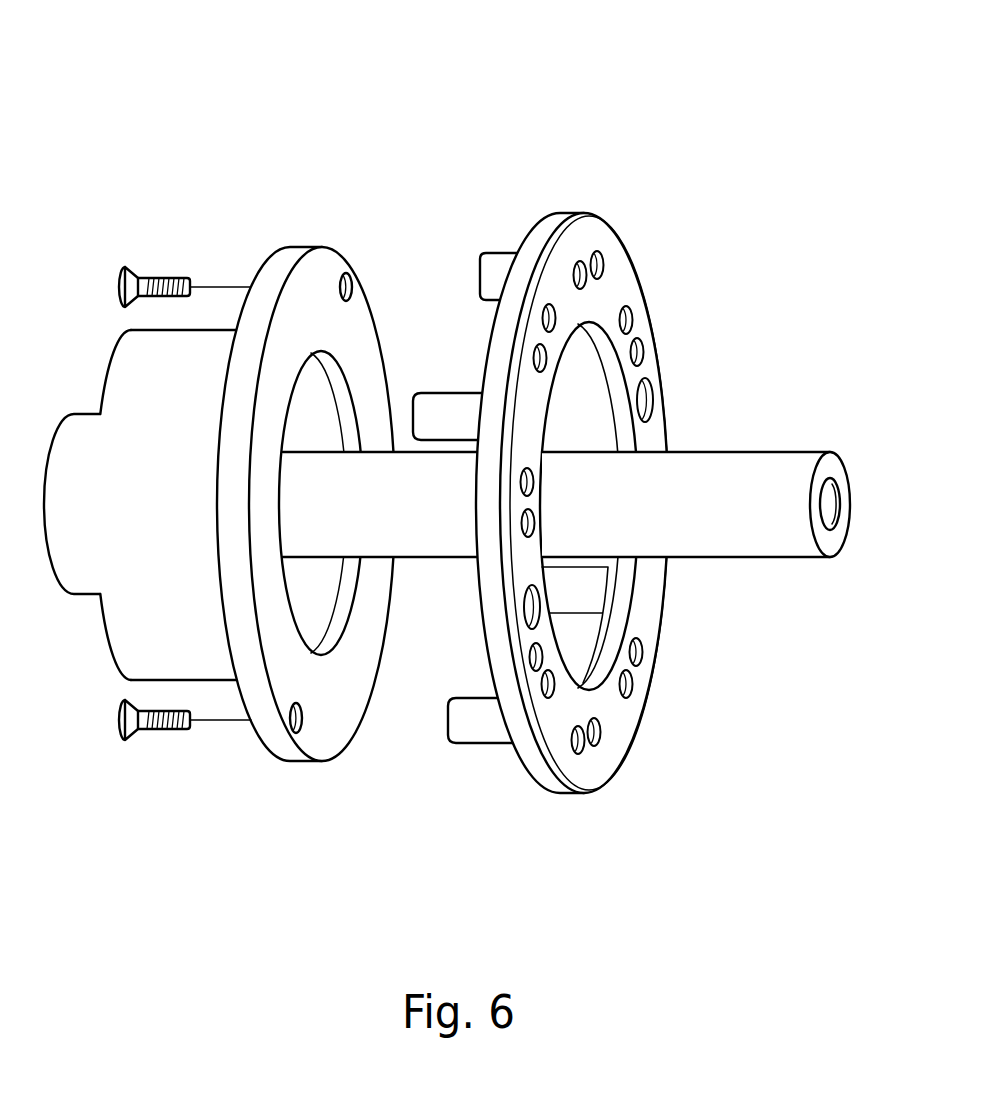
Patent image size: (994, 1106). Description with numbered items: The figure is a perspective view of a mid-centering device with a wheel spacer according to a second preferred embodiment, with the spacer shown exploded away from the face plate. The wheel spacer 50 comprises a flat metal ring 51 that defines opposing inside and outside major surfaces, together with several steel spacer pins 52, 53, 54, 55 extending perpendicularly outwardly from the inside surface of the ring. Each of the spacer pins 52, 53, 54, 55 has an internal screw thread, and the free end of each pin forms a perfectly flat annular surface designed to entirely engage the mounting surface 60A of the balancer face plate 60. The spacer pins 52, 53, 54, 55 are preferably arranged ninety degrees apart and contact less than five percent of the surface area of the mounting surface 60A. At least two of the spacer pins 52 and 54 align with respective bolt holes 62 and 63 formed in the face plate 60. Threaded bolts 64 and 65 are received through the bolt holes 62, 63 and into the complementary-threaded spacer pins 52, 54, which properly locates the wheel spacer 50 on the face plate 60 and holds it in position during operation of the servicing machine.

The wheel spacer 50 is at (578, 432).
The flat metal ring 51 is at (612, 503).
The spacer pin 52 is at (486, 278).
The spacer pin 53 is at (457, 398).
The spacer pin 54 is at (466, 740).
The spacer pin 55 is at (570, 597).
The balancer face plate 60 is at (228, 468).
The mounting surface 60A is at (305, 293).
The bolt hole 62 is at (350, 278).
The bolt hole 63 is at (302, 722).
The threaded bolt 64 is at (124, 266).
The threaded bolt 65 is at (116, 728).